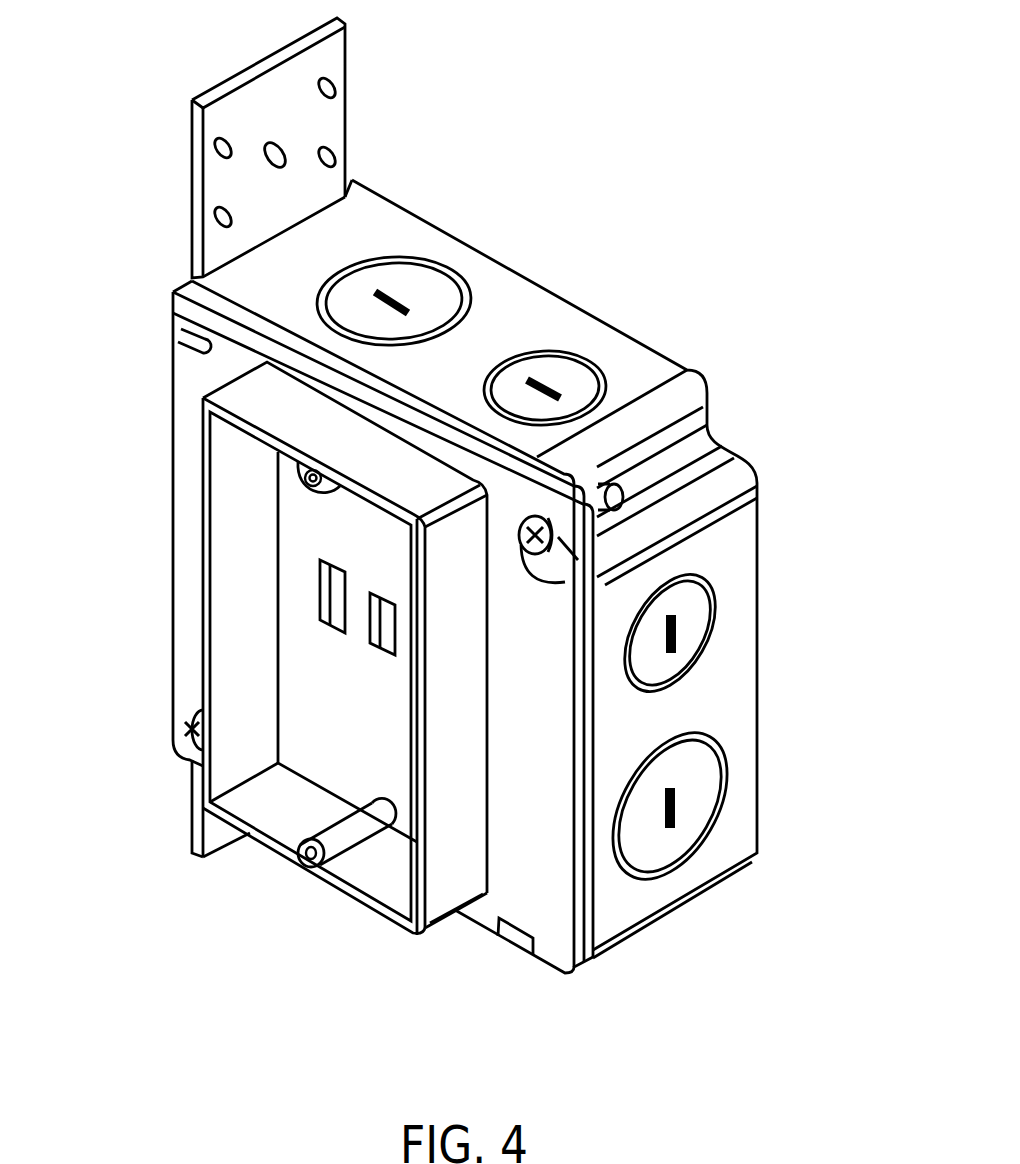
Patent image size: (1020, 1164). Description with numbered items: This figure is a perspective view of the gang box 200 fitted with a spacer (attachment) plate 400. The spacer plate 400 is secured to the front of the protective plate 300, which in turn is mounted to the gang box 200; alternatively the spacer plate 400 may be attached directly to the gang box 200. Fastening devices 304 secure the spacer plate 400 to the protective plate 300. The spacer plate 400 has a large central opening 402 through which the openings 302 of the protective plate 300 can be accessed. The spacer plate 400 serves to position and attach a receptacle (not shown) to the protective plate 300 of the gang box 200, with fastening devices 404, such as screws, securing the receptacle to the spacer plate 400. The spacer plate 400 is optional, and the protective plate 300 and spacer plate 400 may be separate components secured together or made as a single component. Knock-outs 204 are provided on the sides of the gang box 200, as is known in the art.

The gang box 200 is at (622, 178).
The knock-outs 204 is at (565, 380).
The protective plate 300 is at (592, 892).
The openings 302 is at (320, 615).
The fastening devices 304 is at (523, 556).
The spacer plate 400 is at (452, 845).
The large central opening 402 is at (317, 703).
The fastening devices 404 is at (306, 487).